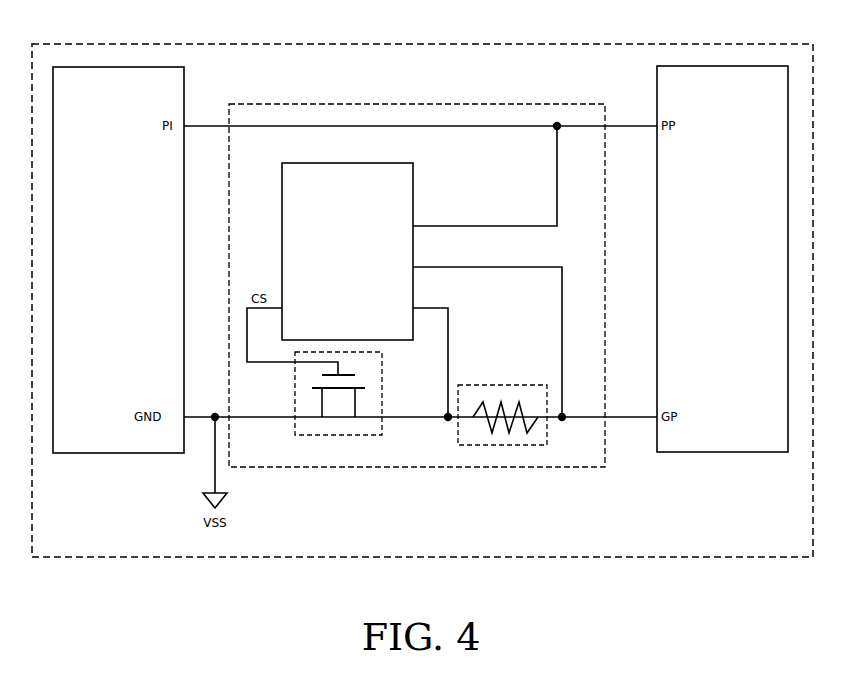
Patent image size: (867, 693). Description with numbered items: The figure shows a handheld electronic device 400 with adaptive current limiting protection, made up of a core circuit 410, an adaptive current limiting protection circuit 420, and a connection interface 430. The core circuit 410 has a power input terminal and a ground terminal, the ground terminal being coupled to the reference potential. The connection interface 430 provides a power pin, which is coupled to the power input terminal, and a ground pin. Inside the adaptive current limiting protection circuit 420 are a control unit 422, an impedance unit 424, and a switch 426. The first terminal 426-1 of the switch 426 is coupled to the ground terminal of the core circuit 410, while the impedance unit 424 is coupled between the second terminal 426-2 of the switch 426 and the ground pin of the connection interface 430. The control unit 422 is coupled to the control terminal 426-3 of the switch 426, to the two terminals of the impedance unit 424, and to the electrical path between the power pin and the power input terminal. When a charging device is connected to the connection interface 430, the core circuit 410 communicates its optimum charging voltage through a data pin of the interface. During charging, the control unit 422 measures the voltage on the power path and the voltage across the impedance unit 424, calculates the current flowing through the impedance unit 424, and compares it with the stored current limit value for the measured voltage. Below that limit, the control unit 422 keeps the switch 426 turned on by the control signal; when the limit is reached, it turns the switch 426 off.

The handheld electronic device 400 is at (780, 598).
The core circuit 410 is at (124, 233).
The adaptive current limiting protection circuit 420 is at (417, 243).
The control unit 422 is at (370, 208).
The impedance unit 424 is at (523, 452).
The switch 426 is at (371, 434).
The first terminal of the switch 426-1 is at (308, 452).
The second terminal of the switch 426-2 is at (408, 452).
The control terminal of the switch 426-3 is at (380, 365).
The connection interface 430 is at (729, 231).